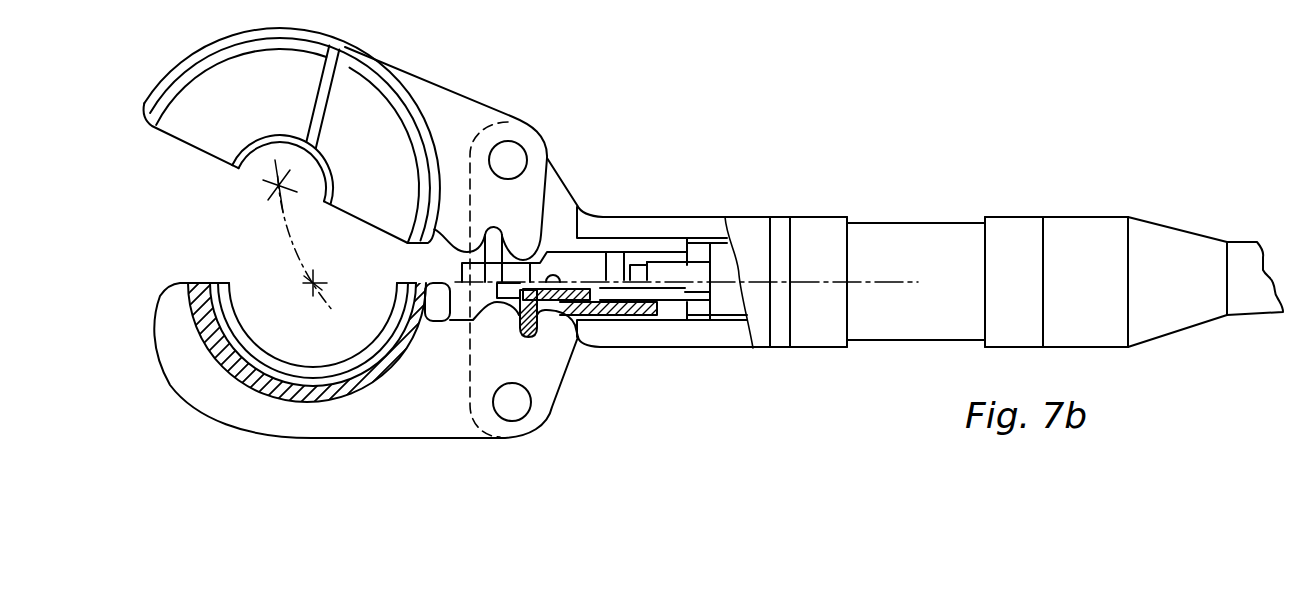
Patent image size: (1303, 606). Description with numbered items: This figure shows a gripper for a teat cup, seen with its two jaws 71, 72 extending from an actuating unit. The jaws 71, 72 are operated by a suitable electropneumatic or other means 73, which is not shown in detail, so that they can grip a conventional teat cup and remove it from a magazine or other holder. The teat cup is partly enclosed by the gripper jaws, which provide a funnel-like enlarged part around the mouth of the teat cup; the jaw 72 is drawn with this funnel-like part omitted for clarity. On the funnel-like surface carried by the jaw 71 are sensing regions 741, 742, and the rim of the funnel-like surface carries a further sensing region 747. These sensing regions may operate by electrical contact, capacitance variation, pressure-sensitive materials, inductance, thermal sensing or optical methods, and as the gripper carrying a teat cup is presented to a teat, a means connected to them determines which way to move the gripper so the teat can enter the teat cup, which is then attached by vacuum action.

The jaw 71 is at (457, 103).
The jaw 72 is at (427, 420).
The electropneumatic or other means 73 is at (673, 344).
The sensing region 741 is at (199, 127).
The sensing region 742 is at (360, 103).
The sensing region 747 is at (186, 58).